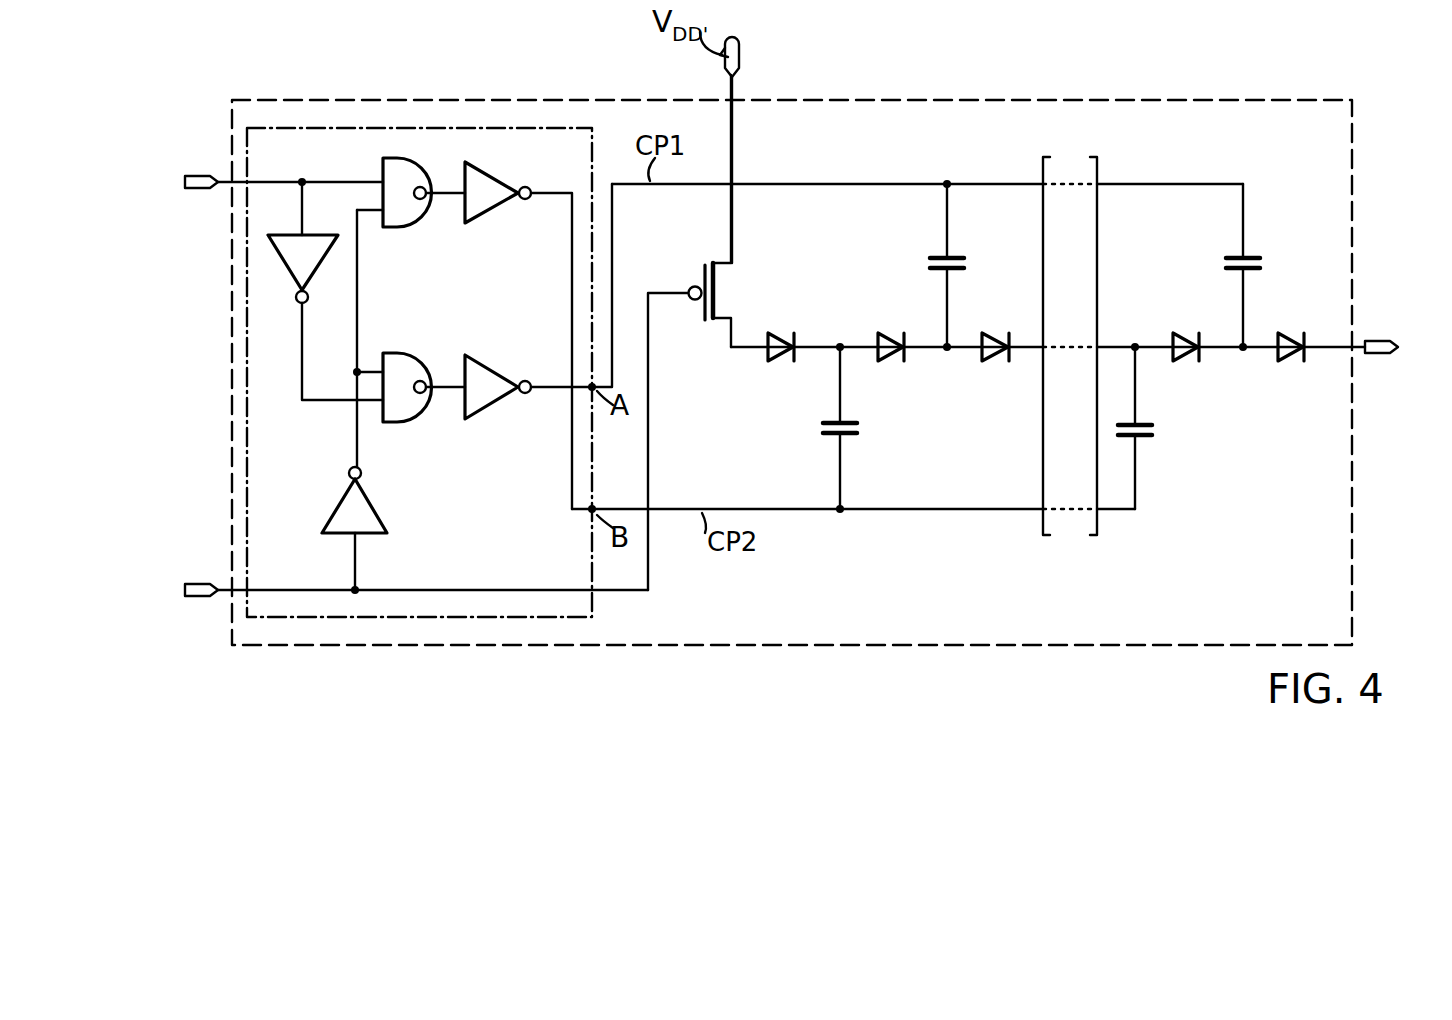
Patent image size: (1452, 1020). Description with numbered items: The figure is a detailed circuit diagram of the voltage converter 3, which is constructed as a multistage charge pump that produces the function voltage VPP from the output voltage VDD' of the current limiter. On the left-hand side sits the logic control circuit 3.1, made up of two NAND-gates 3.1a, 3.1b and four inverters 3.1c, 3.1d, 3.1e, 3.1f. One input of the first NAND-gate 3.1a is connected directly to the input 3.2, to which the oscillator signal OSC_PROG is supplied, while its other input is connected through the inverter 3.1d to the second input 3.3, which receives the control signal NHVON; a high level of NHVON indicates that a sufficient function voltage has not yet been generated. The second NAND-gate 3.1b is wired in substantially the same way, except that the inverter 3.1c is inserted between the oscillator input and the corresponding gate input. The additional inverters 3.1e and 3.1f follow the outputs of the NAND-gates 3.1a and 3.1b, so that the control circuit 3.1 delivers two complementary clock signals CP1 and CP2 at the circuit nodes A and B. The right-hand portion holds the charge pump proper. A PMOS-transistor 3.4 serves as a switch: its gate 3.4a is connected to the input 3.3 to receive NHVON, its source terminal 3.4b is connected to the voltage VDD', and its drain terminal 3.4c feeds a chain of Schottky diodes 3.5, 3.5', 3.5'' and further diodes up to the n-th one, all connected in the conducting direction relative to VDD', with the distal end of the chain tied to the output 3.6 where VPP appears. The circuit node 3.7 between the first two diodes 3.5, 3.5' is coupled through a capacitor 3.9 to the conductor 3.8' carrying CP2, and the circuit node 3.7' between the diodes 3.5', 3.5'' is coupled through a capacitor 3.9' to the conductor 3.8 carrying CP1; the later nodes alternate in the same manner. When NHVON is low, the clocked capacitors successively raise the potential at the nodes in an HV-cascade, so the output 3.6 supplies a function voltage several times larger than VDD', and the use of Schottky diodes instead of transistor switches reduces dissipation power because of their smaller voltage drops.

The voltage converter 3 is at (505, 648).
The logic control circuit 3.1 is at (592, 618).
The first NAND-gate 3.1a is at (405, 227).
The second NAND-gate 3.1b is at (405, 353).
The inverter 3.1c is at (287, 275).
The inverter 3.1d is at (378, 512).
The inverter 3.1e is at (490, 218).
The inverter 3.1f is at (498, 357).
The input 3.2 is at (192, 168).
The second input 3.3 is at (200, 600).
The PMOS-transistor 3.4 is at (725, 332).
The gate 3.4a is at (697, 277).
The source terminal 3.4b is at (735, 237).
The drain terminal 3.4c is at (713, 320).
The Schottky diode 3.5 is at (759, 379).
The Schottky diode 3.5' is at (891, 377).
The Schottky diode 3.5'' is at (996, 382).
The output 3.6 is at (1390, 340).
The circuit node 3.7 is at (845, 313).
The circuit node 3.7' is at (964, 408).
The conductor 3.8 is at (927, 156).
The conductor 3.8' is at (887, 538).
The capacitor 3.9 is at (865, 430).
The capacitor 3.9' is at (922, 263).